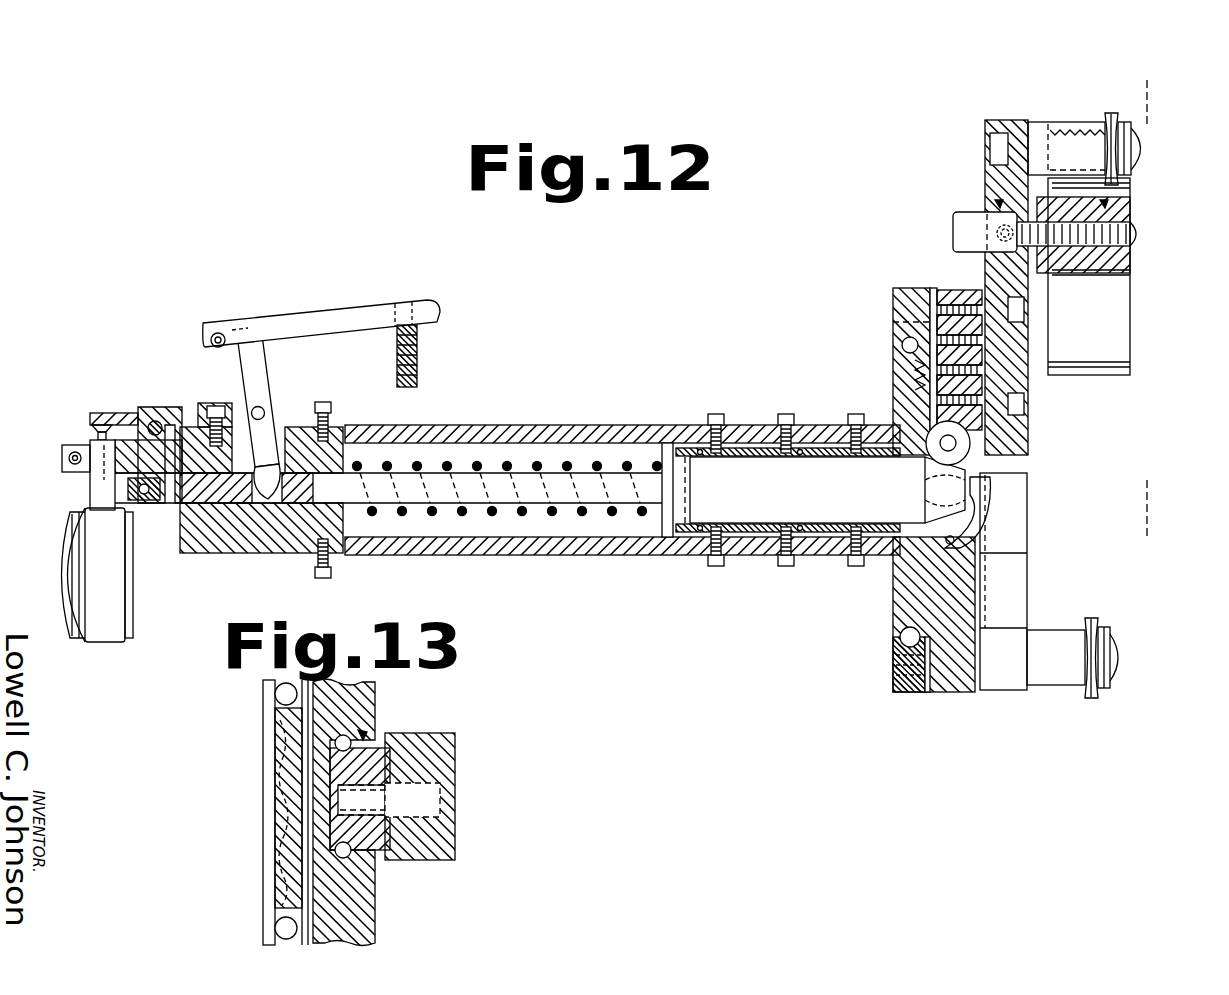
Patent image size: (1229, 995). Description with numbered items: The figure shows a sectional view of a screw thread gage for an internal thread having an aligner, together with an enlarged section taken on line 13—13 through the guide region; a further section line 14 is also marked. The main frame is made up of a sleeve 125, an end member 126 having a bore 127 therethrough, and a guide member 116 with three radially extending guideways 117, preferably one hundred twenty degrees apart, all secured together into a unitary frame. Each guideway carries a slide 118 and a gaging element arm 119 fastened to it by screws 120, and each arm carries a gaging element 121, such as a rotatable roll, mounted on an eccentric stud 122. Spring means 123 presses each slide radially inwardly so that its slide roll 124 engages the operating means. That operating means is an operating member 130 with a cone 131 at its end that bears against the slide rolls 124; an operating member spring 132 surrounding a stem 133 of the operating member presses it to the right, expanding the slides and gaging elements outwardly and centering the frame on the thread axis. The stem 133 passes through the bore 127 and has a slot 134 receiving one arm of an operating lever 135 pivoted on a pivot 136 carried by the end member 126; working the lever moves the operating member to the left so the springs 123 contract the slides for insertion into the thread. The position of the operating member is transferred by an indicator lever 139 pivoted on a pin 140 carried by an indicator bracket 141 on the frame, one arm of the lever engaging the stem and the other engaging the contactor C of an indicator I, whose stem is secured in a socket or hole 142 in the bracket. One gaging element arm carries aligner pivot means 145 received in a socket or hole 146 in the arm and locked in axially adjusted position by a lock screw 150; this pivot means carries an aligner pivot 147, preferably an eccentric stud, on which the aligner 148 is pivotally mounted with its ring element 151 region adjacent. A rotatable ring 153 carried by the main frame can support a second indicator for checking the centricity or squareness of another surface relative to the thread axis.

In FIG. 12, the sleeve 125 is at (578, 428).
In FIG. 12, the stem 133 is at (480, 470).
In FIG. 12, the operating member spring 132 is at (495, 540).
In FIG. 12, the operating member 130 is at (760, 520).
In FIG. 12, the cone 131 is at (935, 482).
In FIG. 12, the end member 126 is at (262, 548).
In FIG. 12, the slot 134 is at (265, 495).
In FIG. 12, the bore 127 is at (200, 510).
In FIG. 12, the pivot 136 is at (264, 410).
In FIG. 12, the operating lever 135 is at (315, 320).
In FIG. 12, the indicator bracket 141 is at (172, 407).
In FIG. 12, the pin 140 is at (153, 422).
In FIG. 12, the indicator lever 139 is at (108, 414).
In FIG. 12, the contactor C is at (92, 429).
In FIG. 12, the socket or hole 142 is at (105, 458).
In FIG. 12, the indicator I is at (58, 572).
In FIG. 12, the guide member 116 is at (893, 383).
In FIG. 13, the guide member 116 is at (265, 698).
In FIG. 12, the rotatable ring 153 is at (915, 692).
In FIG. 13, the rotatable ring 153 is at (265, 790).
In FIG. 12, the slide 118 is at (935, 292).
In FIG. 13, the slide 118 is at (383, 830).
In FIG. 12, the screws 120 is at (962, 290).
In FIG. 12, the spring means 123 is at (918, 372).
In FIG. 12, the slide roll 124 is at (935, 432).
In FIG. 12, the gaging element arm 119 is at (990, 178).
In FIG. 13, the gaging element arm 119 is at (452, 758).
In FIG. 12, the eccentric stud 122 is at (1040, 133).
In FIG. 12, the gaging element 121 is at (1110, 125).
In FIG. 12, the aligner pivot means 145 is at (955, 225).
In FIG. 12, the lock screw 150 is at (998, 234).
In FIG. 12, the socket or hole 146 is at (998, 206).
In FIG. 12, the aligner pivot 147 is at (1106, 206).
In FIG. 12, the ring 151 is at (1065, 252).
In FIG. 12, the aligner 148 is at (1115, 330).
In FIG. 12, the line 13— 13 is at (893, 325).
In FIG. 12, the section line 14 is at (1158, 101).
In FIG. 13, the guideways 117 is at (363, 735).